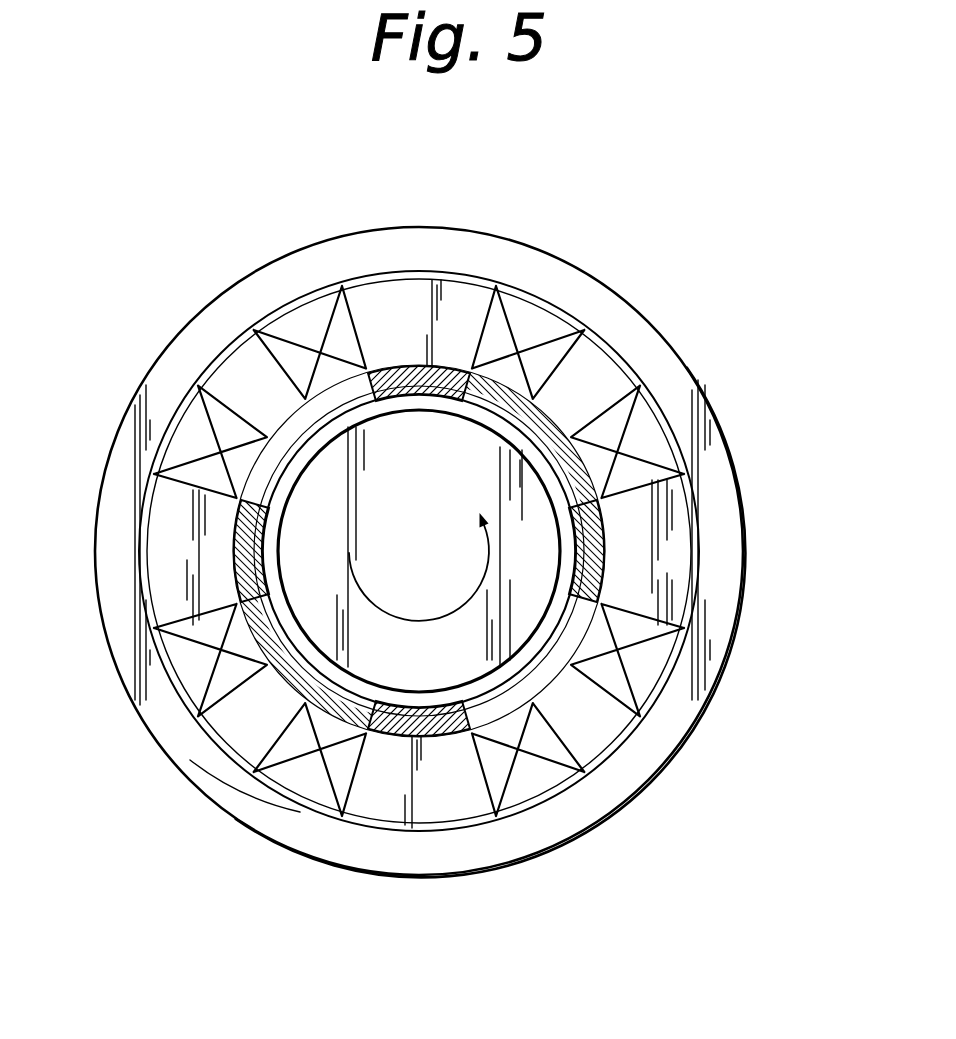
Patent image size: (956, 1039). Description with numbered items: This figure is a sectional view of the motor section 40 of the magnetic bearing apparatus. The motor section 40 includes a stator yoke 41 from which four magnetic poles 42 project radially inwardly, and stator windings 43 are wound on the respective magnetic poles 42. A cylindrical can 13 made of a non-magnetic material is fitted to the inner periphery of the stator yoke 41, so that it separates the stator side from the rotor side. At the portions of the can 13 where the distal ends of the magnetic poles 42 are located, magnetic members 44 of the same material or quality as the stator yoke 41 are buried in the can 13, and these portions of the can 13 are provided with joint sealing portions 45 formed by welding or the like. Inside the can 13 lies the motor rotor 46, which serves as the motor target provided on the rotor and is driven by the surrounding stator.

The cylindrical can 13 is at (230, 750).
The motor section 40 is at (637, 300).
The stator yoke 41 is at (178, 368).
The magnetic poles 42 is at (452, 300).
The stator windings 43 is at (298, 318).
The magnetic members 44 is at (412, 377).
The joint sealing portions 45 is at (378, 393).
The motor rotor 46 is at (582, 570).